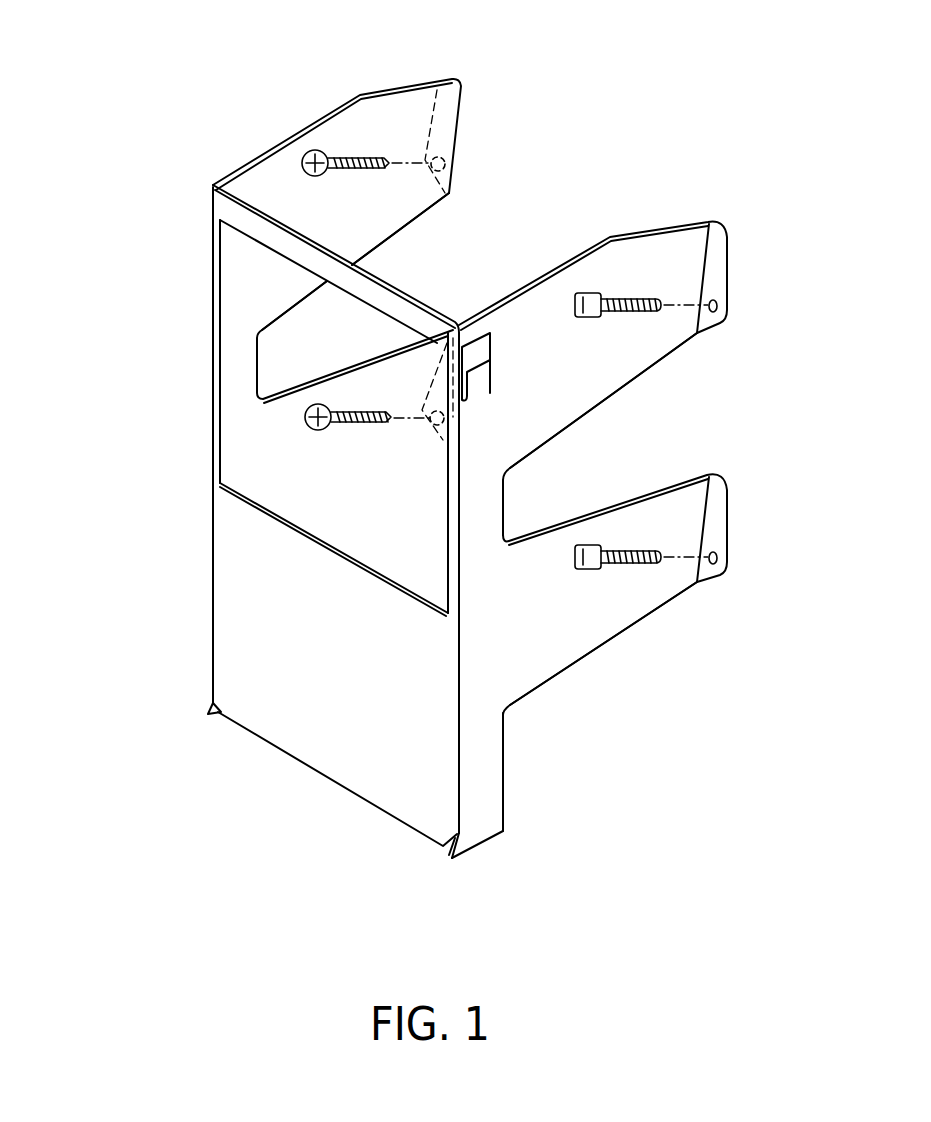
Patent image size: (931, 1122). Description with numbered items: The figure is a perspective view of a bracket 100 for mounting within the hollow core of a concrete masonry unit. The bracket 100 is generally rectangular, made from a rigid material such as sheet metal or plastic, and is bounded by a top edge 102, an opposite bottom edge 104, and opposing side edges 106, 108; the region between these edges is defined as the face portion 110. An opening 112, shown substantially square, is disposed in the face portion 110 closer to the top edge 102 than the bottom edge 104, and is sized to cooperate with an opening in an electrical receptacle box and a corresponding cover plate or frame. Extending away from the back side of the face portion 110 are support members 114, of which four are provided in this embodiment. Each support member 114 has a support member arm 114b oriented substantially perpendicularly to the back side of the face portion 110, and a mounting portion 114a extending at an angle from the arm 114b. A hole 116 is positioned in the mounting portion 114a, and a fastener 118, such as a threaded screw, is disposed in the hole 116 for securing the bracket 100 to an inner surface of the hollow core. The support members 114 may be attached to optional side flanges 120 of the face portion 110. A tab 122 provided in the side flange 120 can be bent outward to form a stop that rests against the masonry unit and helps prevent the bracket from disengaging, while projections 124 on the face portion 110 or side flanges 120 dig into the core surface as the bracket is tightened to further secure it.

The bracket 100 is at (160, 42).
The top edge 102 is at (280, 217).
The bottom edge 104 is at (368, 802).
The side edge 106 is at (213, 386).
The side edge 108 is at (463, 778).
The face portion 110 is at (312, 705).
The opening 112 is at (278, 375).
The support member 114 is at (370, 237).
The mounting portion 114a is at (720, 277).
The support member arm 114b is at (402, 200).
The hole 116 is at (440, 166).
The fastener 118 is at (634, 302).
The side flange 120 is at (483, 725).
The tab 122 is at (490, 386).
The projection 124 is at (214, 713).